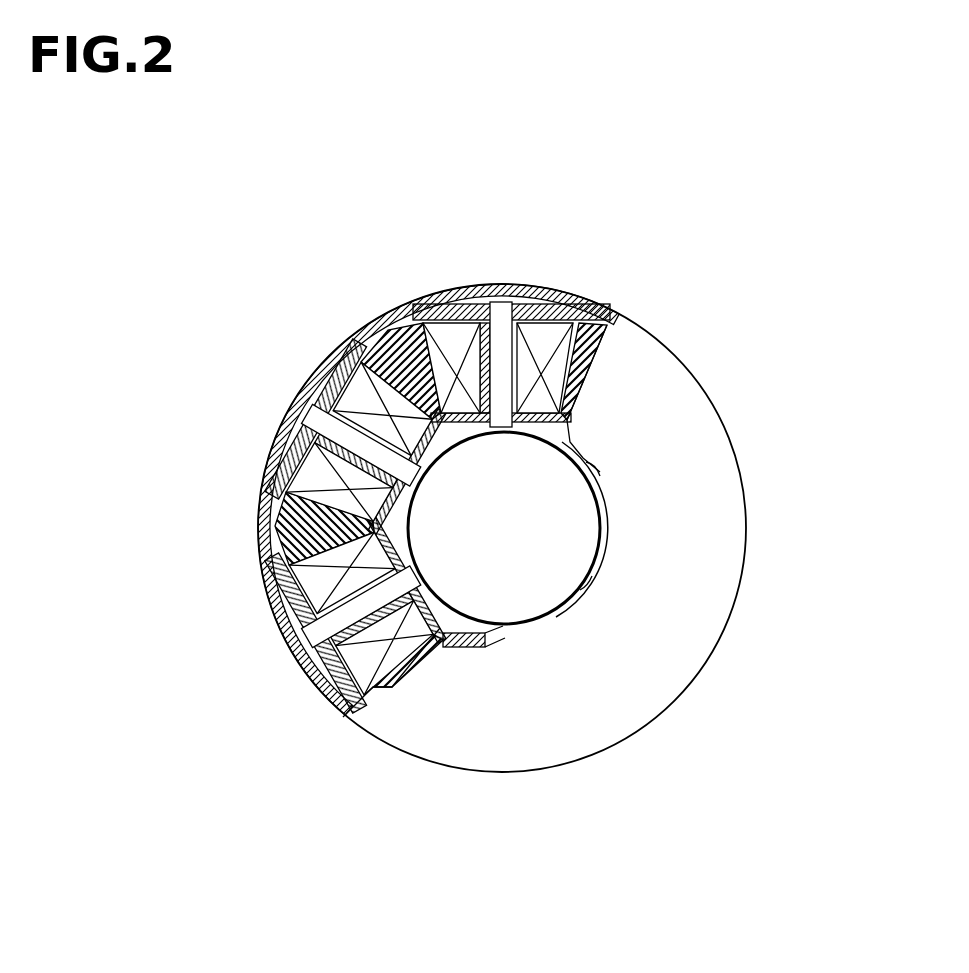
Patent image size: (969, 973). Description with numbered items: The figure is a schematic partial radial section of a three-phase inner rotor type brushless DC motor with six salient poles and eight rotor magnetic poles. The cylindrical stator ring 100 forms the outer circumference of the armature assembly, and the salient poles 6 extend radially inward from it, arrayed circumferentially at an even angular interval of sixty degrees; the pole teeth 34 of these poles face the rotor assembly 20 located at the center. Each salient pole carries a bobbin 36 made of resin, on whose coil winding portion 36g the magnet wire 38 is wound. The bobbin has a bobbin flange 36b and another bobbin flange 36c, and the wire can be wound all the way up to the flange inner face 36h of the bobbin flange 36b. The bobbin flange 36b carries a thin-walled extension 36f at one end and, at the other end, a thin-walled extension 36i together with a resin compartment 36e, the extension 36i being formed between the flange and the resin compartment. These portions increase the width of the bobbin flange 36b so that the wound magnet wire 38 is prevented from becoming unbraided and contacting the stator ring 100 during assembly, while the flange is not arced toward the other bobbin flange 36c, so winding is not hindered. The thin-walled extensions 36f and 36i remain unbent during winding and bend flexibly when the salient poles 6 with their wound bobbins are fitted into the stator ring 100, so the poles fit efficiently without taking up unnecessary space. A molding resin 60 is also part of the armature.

The stator ring 100 is at (583, 302).
The salient poles 6 is at (528, 298).
The rotor assembly 20 is at (562, 534).
The pole teeth 34 is at (545, 377).
The bobbin 36 is at (288, 447).
The bobbin flange 36b is at (458, 306).
The bobbin flange 36c is at (413, 632).
The resin compartment 36e is at (372, 338).
The thin-walled extension 36f is at (388, 358).
The coil winding portion 36g is at (372, 676).
The flange inner face 36h is at (562, 345).
The thin-walled extension 36i is at (262, 537).
The magnet wire 38 is at (313, 587).
The molding resin 60 is at (380, 397).